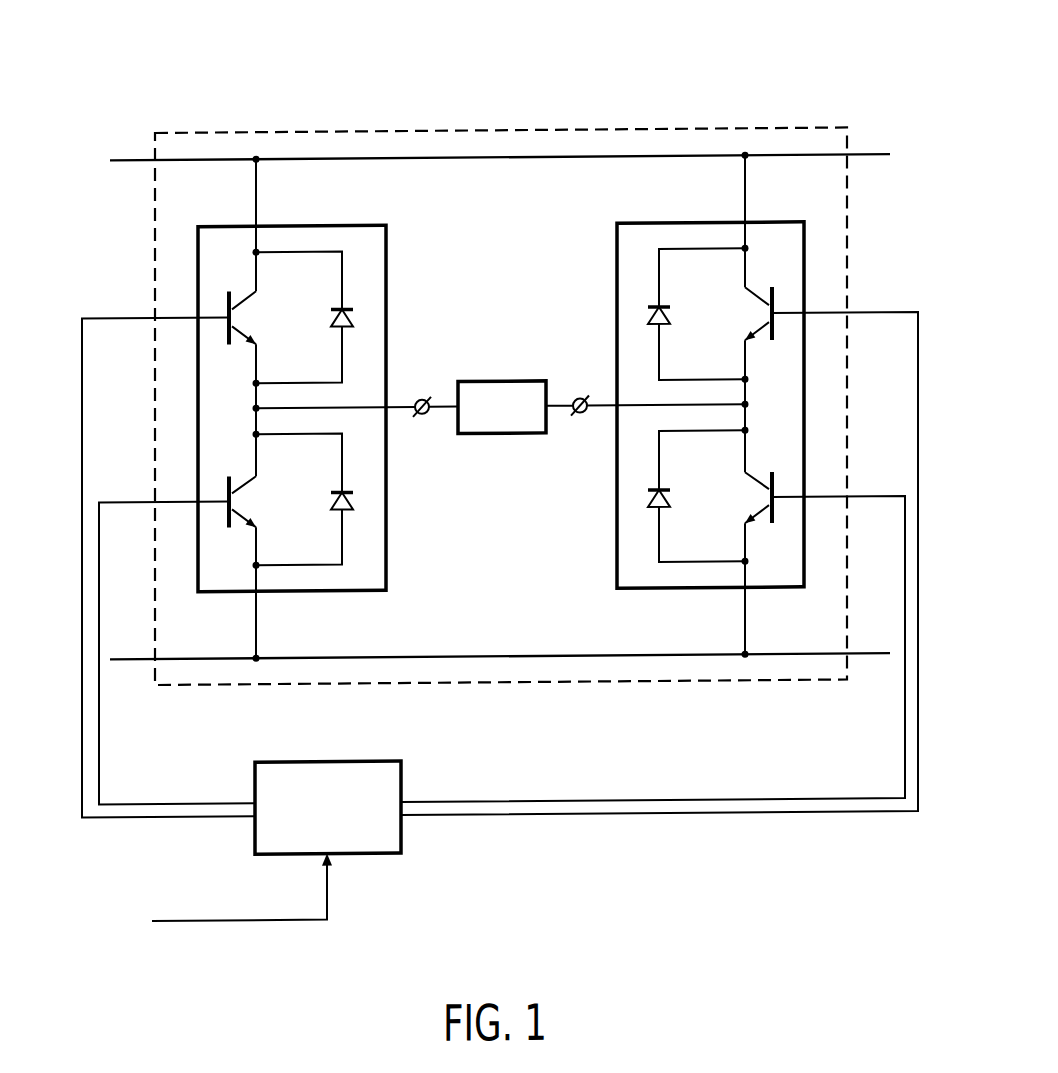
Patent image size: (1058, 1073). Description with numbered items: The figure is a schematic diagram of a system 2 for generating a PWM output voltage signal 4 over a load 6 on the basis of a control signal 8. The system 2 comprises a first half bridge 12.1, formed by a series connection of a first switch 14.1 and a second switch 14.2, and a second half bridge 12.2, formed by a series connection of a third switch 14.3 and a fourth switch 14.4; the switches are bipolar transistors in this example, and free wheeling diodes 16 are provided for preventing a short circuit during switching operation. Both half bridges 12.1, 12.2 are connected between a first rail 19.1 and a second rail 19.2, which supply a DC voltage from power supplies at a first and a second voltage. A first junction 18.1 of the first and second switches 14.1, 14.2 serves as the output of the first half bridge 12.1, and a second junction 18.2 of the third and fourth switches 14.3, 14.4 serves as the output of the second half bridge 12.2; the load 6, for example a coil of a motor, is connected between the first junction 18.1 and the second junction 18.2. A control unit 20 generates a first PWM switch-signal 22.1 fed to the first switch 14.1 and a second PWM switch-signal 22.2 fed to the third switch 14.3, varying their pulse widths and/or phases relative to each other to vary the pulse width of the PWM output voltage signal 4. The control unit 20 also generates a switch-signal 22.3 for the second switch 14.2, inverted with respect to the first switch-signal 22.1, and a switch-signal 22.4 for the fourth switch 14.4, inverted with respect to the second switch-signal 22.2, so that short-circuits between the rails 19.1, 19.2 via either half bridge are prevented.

The system 2 is at (824, 72).
The PWM output voltage signal 4 is at (568, 424).
The load 6 is at (498, 381).
The control signal 8 is at (219, 918).
The first half bridge 12.1 is at (326, 224).
The second half bridge 12.2 is at (662, 224).
The first switch 14.1 is at (252, 316).
The second switch 14.2 is at (252, 501).
The third switch 14.3 is at (752, 315).
The fourth switch 14.4 is at (752, 499).
The free wheeling diodes 16 is at (352, 318).
The first junction 18.1 is at (250, 406).
The second junction 18.2 is at (752, 406).
The first rail 19.1 is at (872, 157).
The second rail 19.2 is at (872, 656).
The control unit 20 is at (333, 760).
The first PWM switch-signal 22.1 is at (108, 315).
The second PWM switch-signal 22.2 is at (661, 814).
The switch-signal 22.3 is at (126, 499).
The switch-signal 22.4 is at (582, 801).